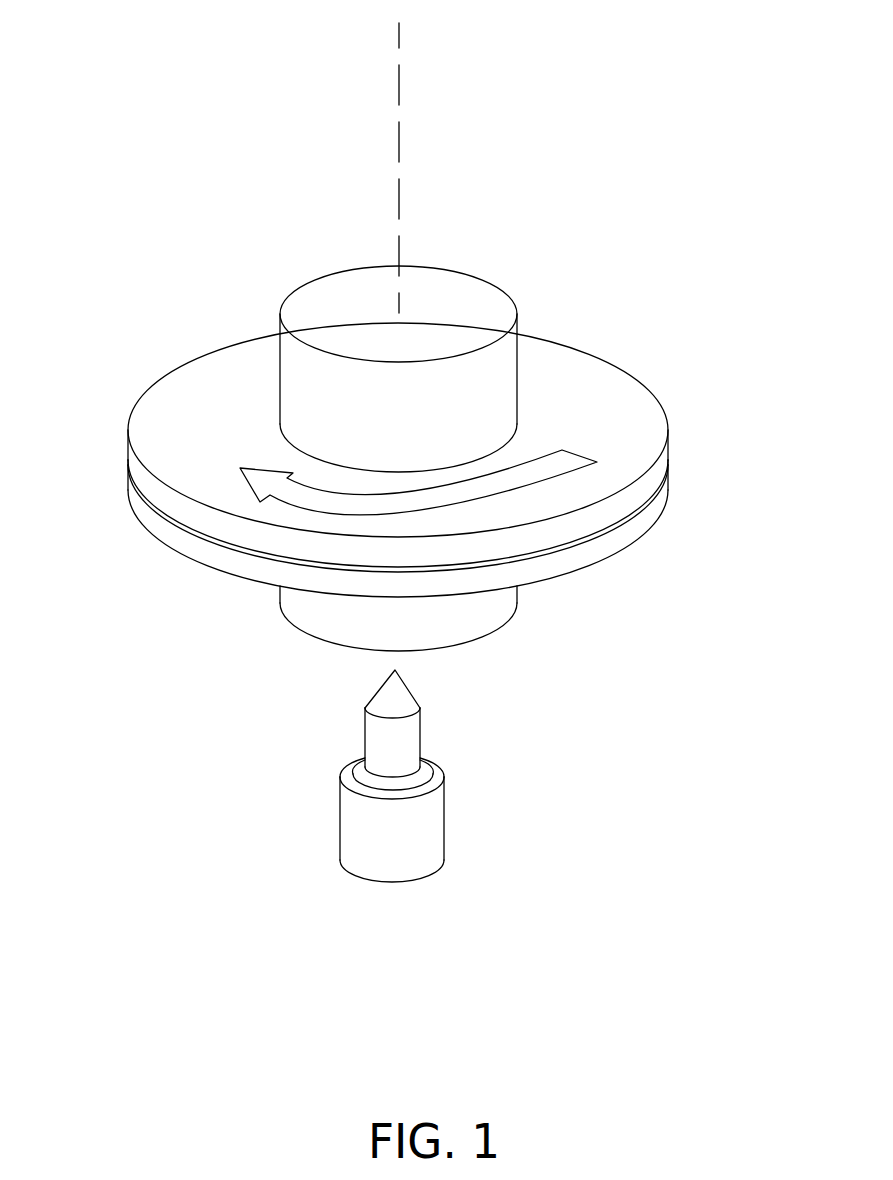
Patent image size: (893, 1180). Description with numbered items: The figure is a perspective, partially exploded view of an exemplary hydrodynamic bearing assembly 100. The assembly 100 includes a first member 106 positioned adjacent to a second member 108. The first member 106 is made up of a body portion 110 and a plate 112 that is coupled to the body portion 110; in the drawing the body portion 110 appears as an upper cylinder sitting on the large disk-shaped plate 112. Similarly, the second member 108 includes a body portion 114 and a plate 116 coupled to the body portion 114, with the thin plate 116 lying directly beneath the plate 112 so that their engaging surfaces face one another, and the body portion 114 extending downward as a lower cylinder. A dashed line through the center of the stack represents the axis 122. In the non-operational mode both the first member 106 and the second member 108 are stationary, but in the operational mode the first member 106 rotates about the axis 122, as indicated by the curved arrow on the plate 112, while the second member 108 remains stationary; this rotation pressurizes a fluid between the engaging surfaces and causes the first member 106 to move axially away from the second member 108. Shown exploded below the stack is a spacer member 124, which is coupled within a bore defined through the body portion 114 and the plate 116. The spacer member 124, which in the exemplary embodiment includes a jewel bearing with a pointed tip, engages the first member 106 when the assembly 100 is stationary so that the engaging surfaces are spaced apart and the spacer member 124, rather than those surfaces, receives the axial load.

The hydrodynamic bearing assembly 100 is at (143, 215).
The first member 106 is at (602, 318).
The second member 108 is at (638, 593).
The body portion 110 is at (490, 300).
The plate 112 is at (650, 418).
The body portion 114 is at (465, 625).
The plate 116 is at (652, 522).
The axis 122 is at (398, 170).
The spacer member 124 is at (430, 833).